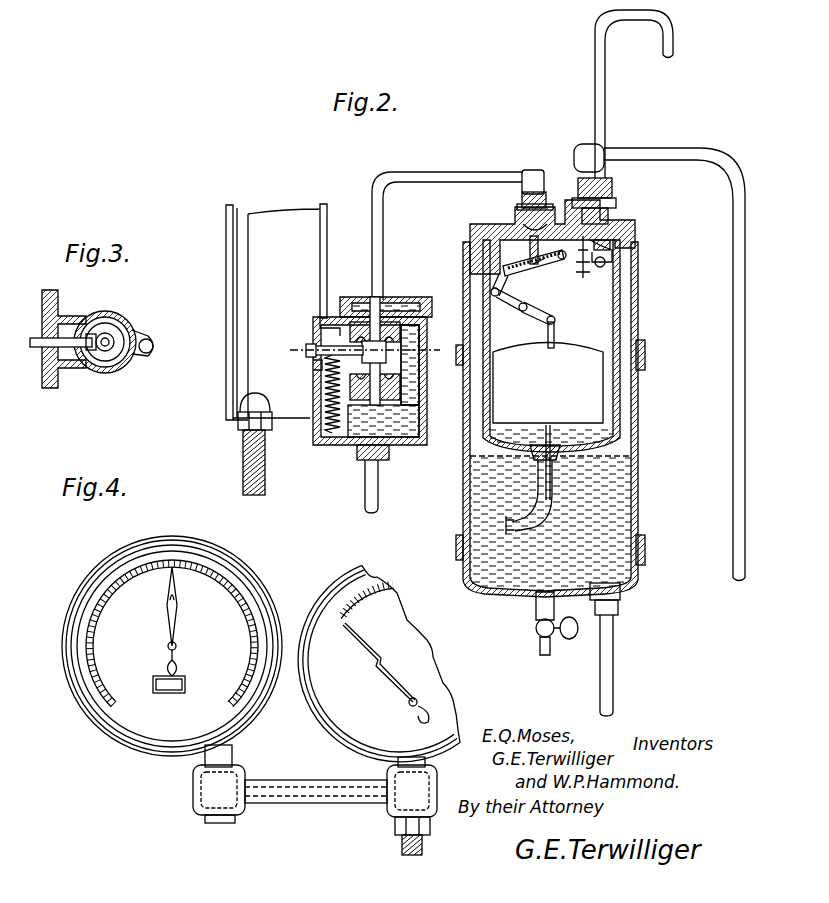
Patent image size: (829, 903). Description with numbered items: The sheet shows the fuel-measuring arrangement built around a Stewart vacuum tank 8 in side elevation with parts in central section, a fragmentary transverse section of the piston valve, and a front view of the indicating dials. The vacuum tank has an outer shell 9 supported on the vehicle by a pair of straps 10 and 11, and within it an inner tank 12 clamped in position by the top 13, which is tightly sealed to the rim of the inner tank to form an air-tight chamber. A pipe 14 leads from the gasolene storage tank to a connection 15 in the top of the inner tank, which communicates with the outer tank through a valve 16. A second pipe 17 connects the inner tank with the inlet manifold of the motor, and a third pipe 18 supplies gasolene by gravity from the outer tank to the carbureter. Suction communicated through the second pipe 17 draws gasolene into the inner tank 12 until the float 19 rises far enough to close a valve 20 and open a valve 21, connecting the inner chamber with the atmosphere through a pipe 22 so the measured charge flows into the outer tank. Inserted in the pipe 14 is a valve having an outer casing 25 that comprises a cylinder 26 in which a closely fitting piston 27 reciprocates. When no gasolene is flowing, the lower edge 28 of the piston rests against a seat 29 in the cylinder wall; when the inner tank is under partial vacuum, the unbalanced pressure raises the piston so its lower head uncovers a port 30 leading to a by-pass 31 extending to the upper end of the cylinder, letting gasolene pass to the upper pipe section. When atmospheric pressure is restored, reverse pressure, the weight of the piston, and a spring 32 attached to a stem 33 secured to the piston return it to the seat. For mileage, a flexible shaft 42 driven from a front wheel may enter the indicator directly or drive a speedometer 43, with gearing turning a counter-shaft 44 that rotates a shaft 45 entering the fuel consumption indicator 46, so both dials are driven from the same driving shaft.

In FIG. 2, the Stewart vacuum tank 8 is at (640, 320).
In FIG. 2, the outer shell 9 is at (640, 430).
In FIG. 2, the strap 10 is at (647, 360).
In FIG. 2, the strap 11 is at (647, 550).
In FIG. 2, the inner tank 12 is at (600, 296).
In FIG. 2, the top 13 is at (502, 226).
In FIG. 2, the pipe 14 is at (459, 172).
In FIG. 2, the connection 15 is at (546, 192).
In FIG. 2, the valve 16 is at (530, 512).
In FIG. 2, the second pipe 17 is at (714, 162).
In FIG. 2, the third pipe 18 is at (613, 657).
In FIG. 2, the float 19 is at (585, 376).
In FIG. 2, the valve 20 is at (612, 256).
In FIG. 2, the valve 21 is at (612, 262).
In FIG. 2, the pipe 22 is at (605, 98).
In FIG. 2, the outer casing 25 is at (410, 440).
In FIG. 3, the outer casing 25 is at (150, 336).
In FIG. 2, the cylinder 26 is at (413, 321).
In FIG. 3, the cylinder 26 is at (121, 323).
In FIG. 2, the piston 27 is at (397, 298).
In FIG. 3, the piston 27 is at (131, 327).
In FIG. 2, the lower edge 28 is at (412, 391).
In FIG. 2, the seat 29 is at (393, 455).
In FIG. 2, the port 30 is at (419, 414).
In FIG. 2, the by-pass 31 is at (419, 372).
In FIG. 3, the by-pass 31 is at (149, 355).
In FIG. 2, the spring 32 is at (330, 388).
In FIG. 3, the spring 32 is at (65, 336).
In FIG. 2, the stem 33 is at (323, 345).
In FIG. 3, the stem 33 is at (81, 369).
In FIG. 2, the flexible shaft 42 is at (264, 470).
In FIG. 4, the flexible shaft 42 is at (426, 846).
In FIG. 4, the speedometer 43 is at (421, 673).
In FIG. 4, the counter-shaft 44 is at (311, 787).
In FIG. 4, the shaft 45 is at (229, 752).
In FIG. 4, the fuel consumption indicator 46 is at (86, 706).